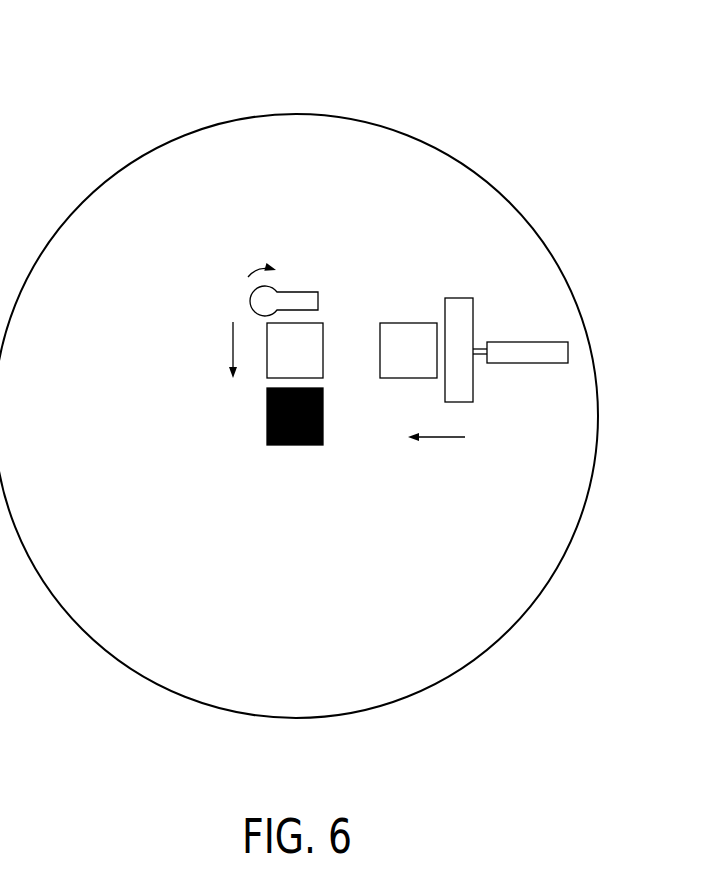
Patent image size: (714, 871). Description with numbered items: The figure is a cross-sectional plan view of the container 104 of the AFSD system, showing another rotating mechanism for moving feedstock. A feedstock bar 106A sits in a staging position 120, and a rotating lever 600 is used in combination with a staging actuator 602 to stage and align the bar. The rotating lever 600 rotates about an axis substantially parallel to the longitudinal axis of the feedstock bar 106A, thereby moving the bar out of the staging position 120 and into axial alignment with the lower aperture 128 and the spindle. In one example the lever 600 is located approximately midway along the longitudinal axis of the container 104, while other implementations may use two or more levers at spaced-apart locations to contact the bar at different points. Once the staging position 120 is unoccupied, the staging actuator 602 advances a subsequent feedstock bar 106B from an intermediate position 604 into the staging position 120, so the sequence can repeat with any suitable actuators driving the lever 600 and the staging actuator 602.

The container 104 is at (299, 58).
The rotating lever 600 is at (290, 290).
The staging position 120 is at (301, 369).
The feedstock bar 106A is at (267, 363).
The subsequent feedstock bar 106B is at (380, 368).
The lower aperture 128 is at (299, 464).
The intermediate position 604 is at (382, 354).
The staging actuator 602 is at (502, 342).